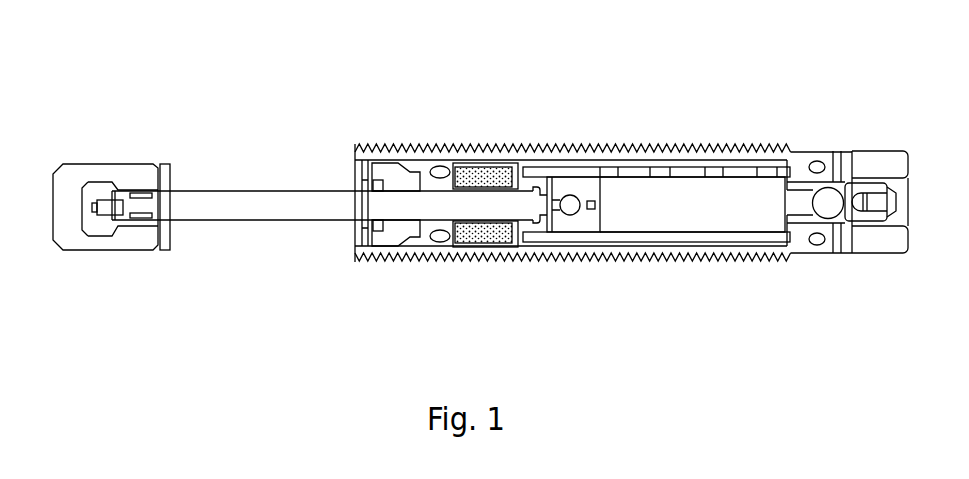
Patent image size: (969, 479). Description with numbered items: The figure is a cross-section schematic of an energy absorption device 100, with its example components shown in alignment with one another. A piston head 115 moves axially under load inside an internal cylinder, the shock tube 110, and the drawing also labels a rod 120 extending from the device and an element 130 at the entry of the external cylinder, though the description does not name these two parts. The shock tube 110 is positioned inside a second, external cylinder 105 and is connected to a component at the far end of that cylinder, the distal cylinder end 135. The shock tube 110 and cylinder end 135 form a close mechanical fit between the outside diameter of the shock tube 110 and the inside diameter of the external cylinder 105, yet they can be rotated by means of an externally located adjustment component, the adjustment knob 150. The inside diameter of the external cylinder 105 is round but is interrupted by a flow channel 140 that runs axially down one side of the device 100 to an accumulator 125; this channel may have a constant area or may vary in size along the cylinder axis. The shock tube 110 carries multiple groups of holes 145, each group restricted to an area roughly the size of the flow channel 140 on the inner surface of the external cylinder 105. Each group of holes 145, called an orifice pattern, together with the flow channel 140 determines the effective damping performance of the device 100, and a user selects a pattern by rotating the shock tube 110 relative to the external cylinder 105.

The energy absorption device 100 is at (128, 107).
The external cylinder 105 is at (383, 270).
The shock tube 110 is at (682, 233).
The piston head 115 is at (582, 182).
The piston rod 120 is at (262, 207).
The accumulator 125 is at (475, 235).
The rod seal / guide 130 is at (425, 172).
The distal cylinder end 135 is at (803, 182).
The flow channel 140 is at (637, 163).
The groups of holes 145 is at (663, 168).
The adjustment knob 150 is at (882, 238).